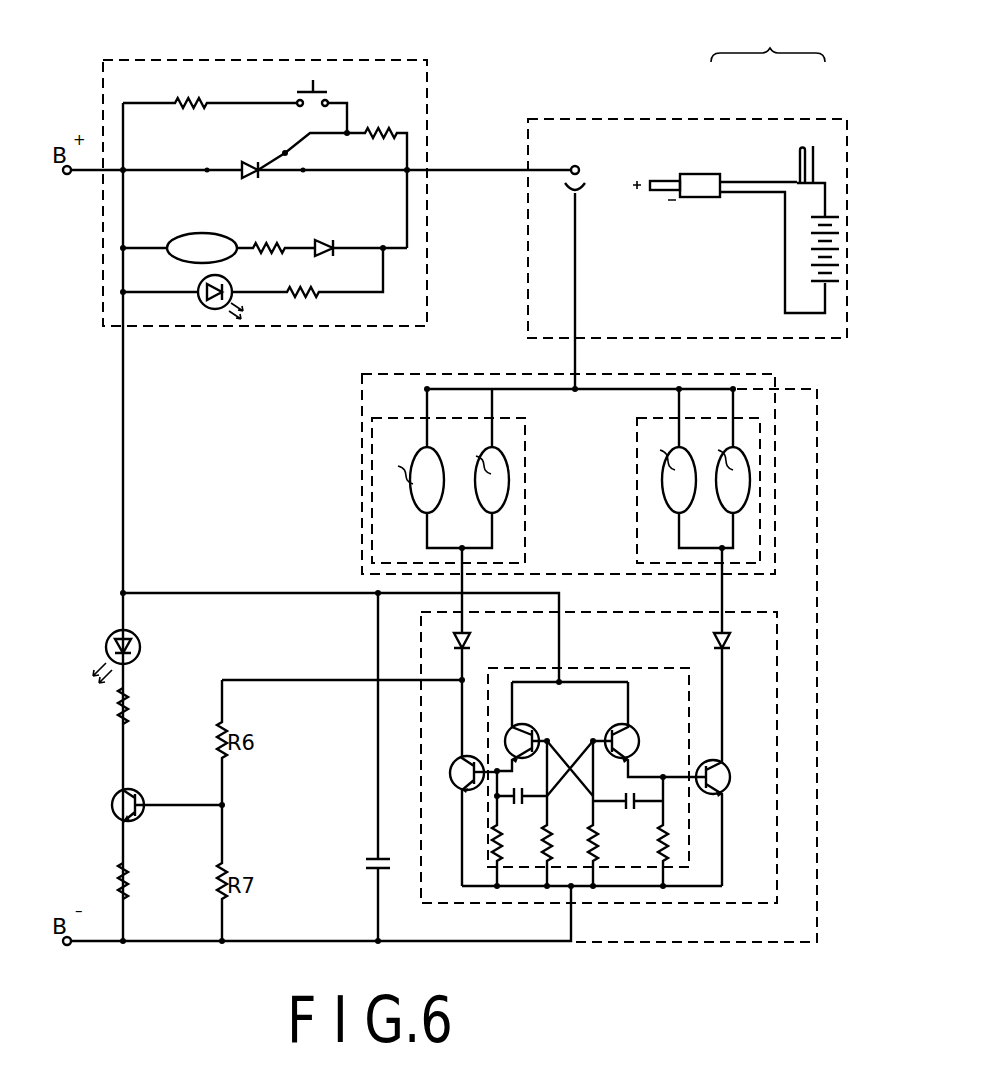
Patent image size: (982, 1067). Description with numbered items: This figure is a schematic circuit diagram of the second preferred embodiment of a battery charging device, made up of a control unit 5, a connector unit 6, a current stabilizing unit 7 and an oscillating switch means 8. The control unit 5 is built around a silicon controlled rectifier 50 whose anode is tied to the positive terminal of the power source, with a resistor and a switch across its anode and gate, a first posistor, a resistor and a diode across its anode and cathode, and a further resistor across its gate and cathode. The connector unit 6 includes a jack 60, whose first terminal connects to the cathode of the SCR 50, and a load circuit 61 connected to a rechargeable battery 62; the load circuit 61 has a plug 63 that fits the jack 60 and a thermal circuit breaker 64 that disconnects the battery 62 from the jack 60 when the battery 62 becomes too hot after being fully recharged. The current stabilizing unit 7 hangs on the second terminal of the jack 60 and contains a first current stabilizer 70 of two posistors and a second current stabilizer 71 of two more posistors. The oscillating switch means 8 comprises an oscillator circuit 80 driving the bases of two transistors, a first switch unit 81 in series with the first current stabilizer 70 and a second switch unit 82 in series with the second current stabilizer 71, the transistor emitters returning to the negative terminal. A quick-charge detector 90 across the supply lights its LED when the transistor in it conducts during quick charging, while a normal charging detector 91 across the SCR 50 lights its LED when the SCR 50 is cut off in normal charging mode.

The control unit 5 is at (270, 62).
The silicon controlled rectifier 50 is at (244, 178).
The normal charging detector 91 is at (235, 330).
The jack 60 is at (573, 165).
The connector unit 6 is at (646, 120).
The load circuit 61 is at (736, 167).
The rechargeable battery 62 is at (830, 215).
The plug 63 is at (698, 170).
The thermal circuit breaker 64 is at (796, 140).
The current stabilizing unit 7 is at (512, 378).
The first current stabilizer 70 is at (520, 512).
The second current stabilizer 71 is at (640, 515).
The oscillating switch means 8 is at (665, 624).
The oscillator circuit 80 is at (630, 668).
The first switch unit 81 is at (443, 772).
The second switch unit 82 is at (781, 696).
The quick-charge detector 90 is at (118, 712).